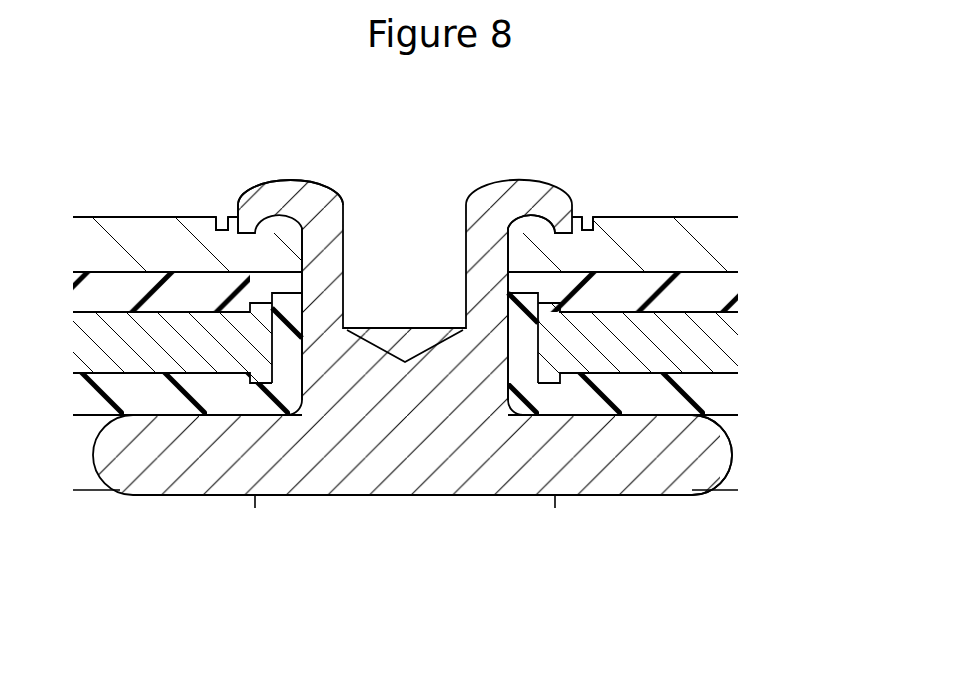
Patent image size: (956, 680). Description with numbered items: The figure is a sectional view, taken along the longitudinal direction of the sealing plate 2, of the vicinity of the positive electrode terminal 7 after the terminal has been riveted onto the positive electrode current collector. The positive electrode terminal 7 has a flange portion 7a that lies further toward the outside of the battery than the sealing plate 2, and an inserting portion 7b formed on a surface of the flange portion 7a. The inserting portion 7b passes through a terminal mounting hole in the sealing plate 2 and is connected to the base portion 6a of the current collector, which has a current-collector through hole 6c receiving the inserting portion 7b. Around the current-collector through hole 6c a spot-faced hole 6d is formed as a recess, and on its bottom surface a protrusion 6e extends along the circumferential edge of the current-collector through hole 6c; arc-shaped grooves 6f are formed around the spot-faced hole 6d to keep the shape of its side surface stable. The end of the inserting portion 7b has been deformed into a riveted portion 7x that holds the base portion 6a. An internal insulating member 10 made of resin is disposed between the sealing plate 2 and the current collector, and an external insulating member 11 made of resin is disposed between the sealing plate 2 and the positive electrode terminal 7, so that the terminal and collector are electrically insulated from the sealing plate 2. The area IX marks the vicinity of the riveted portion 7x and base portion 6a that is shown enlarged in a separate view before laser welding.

The positive electrode terminal 7 is at (225, 504).
The riveted portion 7x is at (288, 188).
The flange portion 7a is at (648, 480).
The inserting portion 7b is at (322, 312).
The base portion 6a is at (718, 243).
The current-collector through hole 6c is at (318, 246).
The spot-faced hole 6d is at (574, 212).
The protrusion 6e is at (556, 222).
The grooves 6f is at (225, 214).
The internal insulating member 10 is at (718, 290).
The sealing plate 2 is at (718, 346).
The external insulating member 11 is at (718, 393).
The area IX is at (585, 176).